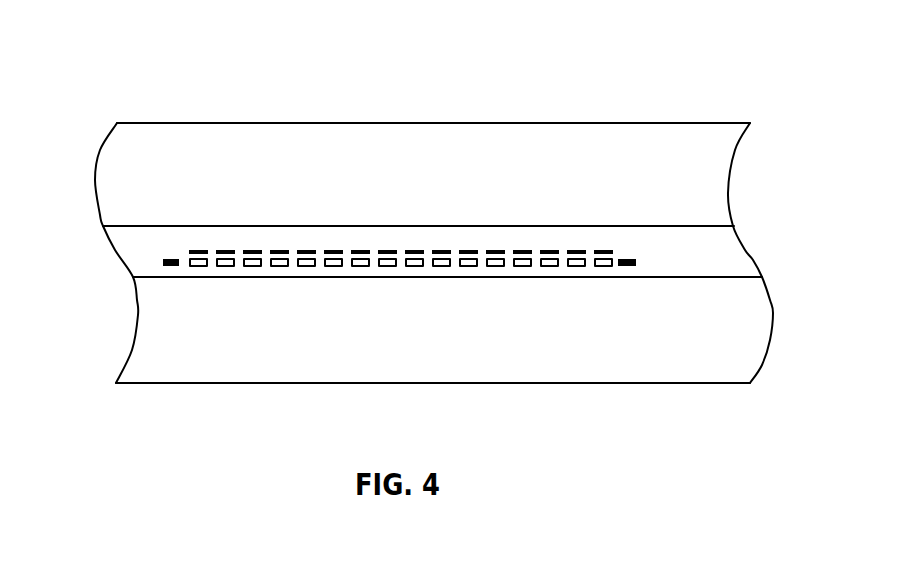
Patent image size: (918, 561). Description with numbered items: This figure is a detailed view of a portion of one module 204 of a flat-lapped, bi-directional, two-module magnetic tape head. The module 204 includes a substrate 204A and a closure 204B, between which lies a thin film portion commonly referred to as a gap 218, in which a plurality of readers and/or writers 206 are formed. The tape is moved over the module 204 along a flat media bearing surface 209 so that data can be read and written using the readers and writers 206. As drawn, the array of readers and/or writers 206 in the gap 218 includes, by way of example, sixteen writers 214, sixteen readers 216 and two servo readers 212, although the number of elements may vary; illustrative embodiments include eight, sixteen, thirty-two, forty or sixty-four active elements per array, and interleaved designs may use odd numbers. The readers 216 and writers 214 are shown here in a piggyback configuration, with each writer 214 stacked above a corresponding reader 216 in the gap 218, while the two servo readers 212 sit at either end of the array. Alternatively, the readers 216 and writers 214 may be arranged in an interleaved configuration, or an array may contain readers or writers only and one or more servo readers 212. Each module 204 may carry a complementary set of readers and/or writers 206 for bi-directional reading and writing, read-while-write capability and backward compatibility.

The module 204 is at (131, 92).
The substrate 204A is at (223, 123).
The closure 204B is at (277, 383).
The media bearing surface 209 is at (358, 190).
The writers 214 is at (521, 249).
The readers 216 is at (520, 267).
The servo readers 212 is at (165, 262).
The readers and/or writers 206 is at (661, 249).
The gap 218 is at (752, 250).